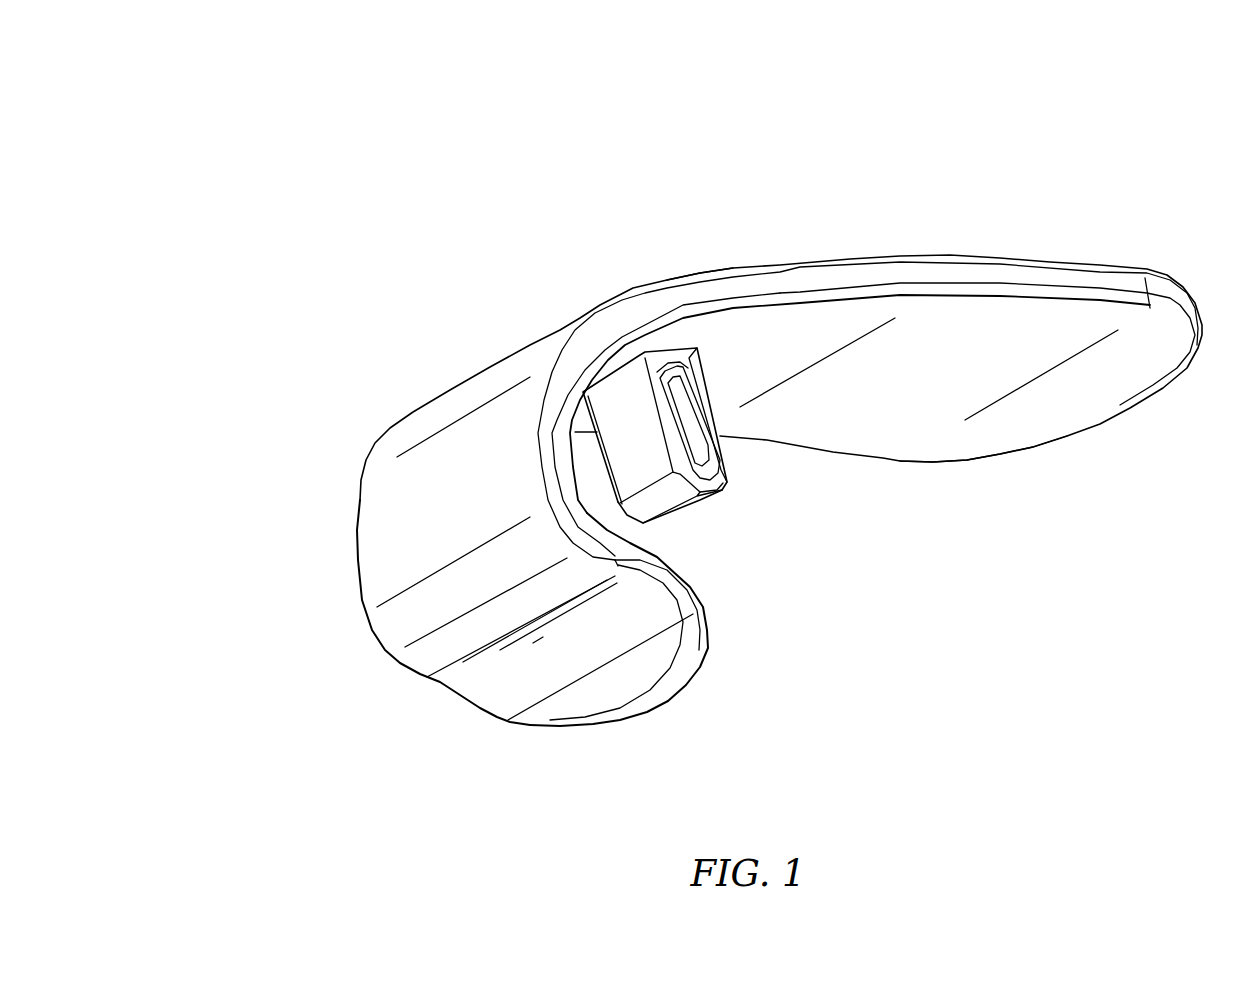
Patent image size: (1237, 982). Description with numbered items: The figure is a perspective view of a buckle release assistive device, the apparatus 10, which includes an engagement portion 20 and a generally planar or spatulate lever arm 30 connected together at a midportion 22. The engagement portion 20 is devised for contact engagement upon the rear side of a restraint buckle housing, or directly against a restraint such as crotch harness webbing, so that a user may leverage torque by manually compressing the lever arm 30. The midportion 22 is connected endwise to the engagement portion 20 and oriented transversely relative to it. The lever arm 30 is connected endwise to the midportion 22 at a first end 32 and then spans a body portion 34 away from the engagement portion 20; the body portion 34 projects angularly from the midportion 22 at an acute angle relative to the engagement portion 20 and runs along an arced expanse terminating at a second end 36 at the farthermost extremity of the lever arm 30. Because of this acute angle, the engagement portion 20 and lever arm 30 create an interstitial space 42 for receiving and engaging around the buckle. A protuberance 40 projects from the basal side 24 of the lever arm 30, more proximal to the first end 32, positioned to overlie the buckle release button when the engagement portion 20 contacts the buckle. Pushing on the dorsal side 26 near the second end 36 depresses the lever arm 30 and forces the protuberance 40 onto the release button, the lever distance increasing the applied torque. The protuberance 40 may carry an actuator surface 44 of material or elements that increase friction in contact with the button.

The apparatus 10 is at (357, 215).
The engagement portion 20 is at (507, 682).
The midportion 22 is at (363, 628).
The basal side 24 is at (995, 480).
The dorsal side 26 is at (963, 235).
The lever arm 30 is at (842, 277).
The first end 32 is at (354, 567).
The body portion 34 is at (713, 253).
The second end 36 is at (1117, 278).
The protuberance 40 is at (693, 457).
The interstitial space 42 is at (790, 530).
The actuator surface 44 is at (675, 515).